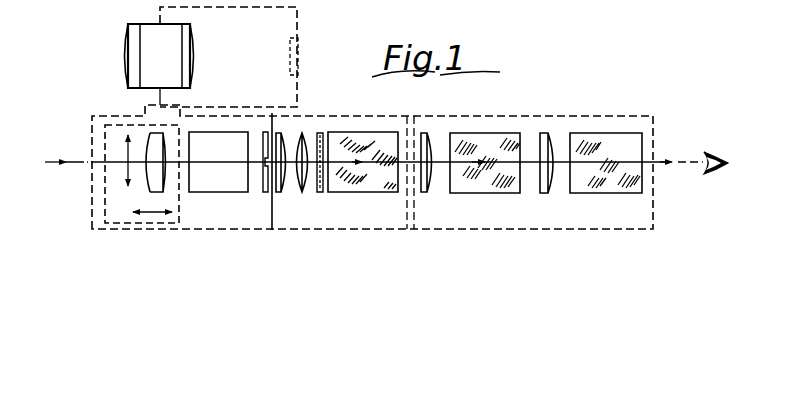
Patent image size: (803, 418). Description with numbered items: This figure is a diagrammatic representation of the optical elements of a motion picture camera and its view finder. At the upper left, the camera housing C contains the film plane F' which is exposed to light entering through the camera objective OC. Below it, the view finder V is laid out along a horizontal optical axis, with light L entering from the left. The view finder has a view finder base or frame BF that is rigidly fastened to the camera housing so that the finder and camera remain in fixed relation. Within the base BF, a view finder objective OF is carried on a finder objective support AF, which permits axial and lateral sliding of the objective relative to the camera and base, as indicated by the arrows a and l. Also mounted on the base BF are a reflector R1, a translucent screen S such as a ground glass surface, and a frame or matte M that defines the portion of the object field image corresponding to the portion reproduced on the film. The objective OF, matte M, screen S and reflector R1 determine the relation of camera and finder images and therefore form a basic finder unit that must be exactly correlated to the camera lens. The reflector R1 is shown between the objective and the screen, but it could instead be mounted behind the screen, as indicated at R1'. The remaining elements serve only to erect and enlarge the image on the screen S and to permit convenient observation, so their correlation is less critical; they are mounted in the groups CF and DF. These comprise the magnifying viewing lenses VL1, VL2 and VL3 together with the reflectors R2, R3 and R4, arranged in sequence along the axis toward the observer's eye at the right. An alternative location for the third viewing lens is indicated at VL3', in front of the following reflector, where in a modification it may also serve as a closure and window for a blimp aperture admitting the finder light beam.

The camera objective OC is at (145, 53).
The camera housing C is at (285, 31).
The film plane F' is at (315, 55).
The magnifying viewing lens VL1 is at (287, 133).
The magnifying viewing lens VL2 is at (304, 130).
The view finder V is at (453, 108).
The incoming light L is at (53, 156).
The lateral movement arrow l is at (128, 163).
The view finder objective OF is at (150, 182).
The axial movement arrow a is at (144, 212).
The view finder base BF is at (96, 236).
The finder objective support AF is at (133, 223).
The reflector R1 is at (218, 162).
The translucent screen S is at (264, 170).
The matte M is at (272, 188).
The alternative reflector position R1' is at (319, 178).
The reflector R2 is at (375, 187).
The finder group CF is at (362, 228).
The alternative viewing lens position VL3' is at (444, 197).
The reflector R3 is at (484, 194).
The magnifying viewing lens VL3 is at (575, 177).
The finder group DF is at (587, 229).
The reflector R4 is at (632, 147).